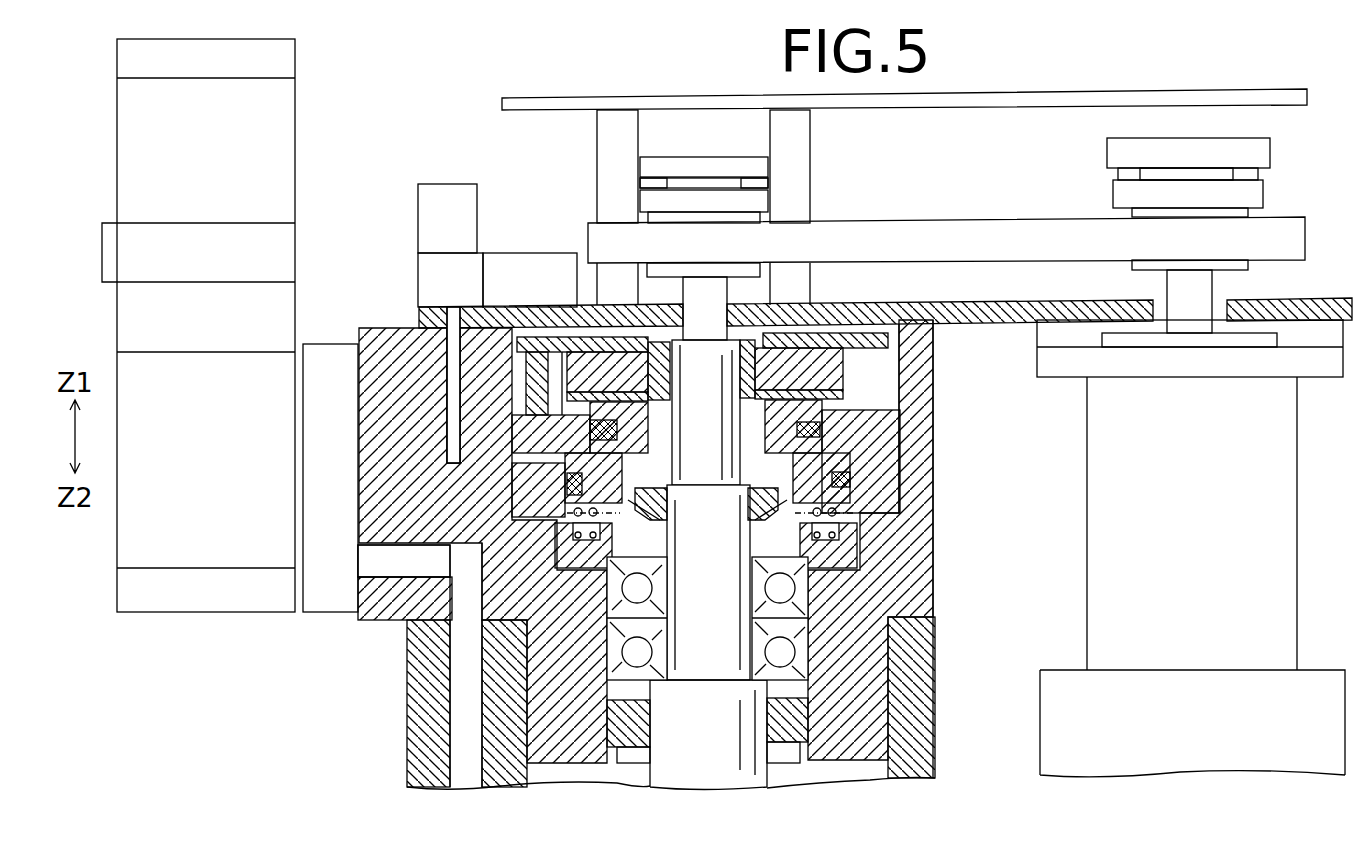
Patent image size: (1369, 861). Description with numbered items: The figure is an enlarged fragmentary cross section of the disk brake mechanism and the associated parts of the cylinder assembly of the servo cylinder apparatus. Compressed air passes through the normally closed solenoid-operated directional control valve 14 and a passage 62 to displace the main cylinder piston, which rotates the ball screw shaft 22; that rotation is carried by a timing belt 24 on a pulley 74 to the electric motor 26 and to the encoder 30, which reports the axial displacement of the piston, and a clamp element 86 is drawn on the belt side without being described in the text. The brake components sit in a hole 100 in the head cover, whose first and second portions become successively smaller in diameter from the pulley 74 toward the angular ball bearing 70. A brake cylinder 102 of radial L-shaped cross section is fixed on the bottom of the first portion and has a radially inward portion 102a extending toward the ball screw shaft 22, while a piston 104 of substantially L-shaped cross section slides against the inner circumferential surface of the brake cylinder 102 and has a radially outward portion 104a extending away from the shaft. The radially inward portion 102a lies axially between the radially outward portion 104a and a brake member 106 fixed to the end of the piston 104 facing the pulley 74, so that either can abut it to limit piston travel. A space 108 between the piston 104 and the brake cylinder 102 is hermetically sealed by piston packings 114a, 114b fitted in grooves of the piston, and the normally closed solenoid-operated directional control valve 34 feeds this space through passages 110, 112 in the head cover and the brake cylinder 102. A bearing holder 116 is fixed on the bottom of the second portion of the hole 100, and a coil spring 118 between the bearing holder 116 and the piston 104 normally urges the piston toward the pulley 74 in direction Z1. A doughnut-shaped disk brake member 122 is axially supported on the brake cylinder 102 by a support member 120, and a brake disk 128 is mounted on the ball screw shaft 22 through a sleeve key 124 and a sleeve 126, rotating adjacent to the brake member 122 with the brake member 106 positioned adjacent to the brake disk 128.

The normally closed solenoid-operated directional control valve 14 is at (155, 378).
The normally closed solenoid-operated directional control valve 34 is at (440, 205).
The passage 110 is at (395, 328).
The passage 62 is at (465, 775).
The coil spring 118 is at (465, 590).
The ball screw shaft 22 is at (710, 665).
The pulley 74 is at (710, 215).
The timing belt 24 is at (968, 230).
The clamp 86 is at (1188, 210).
The electric motor 26 is at (1095, 605).
The encoder 30 is at (1065, 702).
The sleeve 126 is at (562, 337).
The disk brake member 122 is at (537, 352).
The sleeve key 124 is at (640, 342).
The brake disk 128 is at (815, 357).
The support member 120 is at (455, 383).
The brake member 106 is at (500, 402).
The brake cylinder 102 is at (520, 432).
The passage 112 is at (495, 478).
The radially inward portion 102a is at (495, 507).
The bearing holder 116 is at (565, 610).
The piston packing 114a is at (855, 505).
The angular ball bearing 70 is at (610, 600).
The hole 100 is at (862, 370).
The space 108 is at (860, 478).
The piston 104 is at (870, 452).
The piston packing 114b is at (822, 430).
The radially outward portion 104a is at (862, 530).